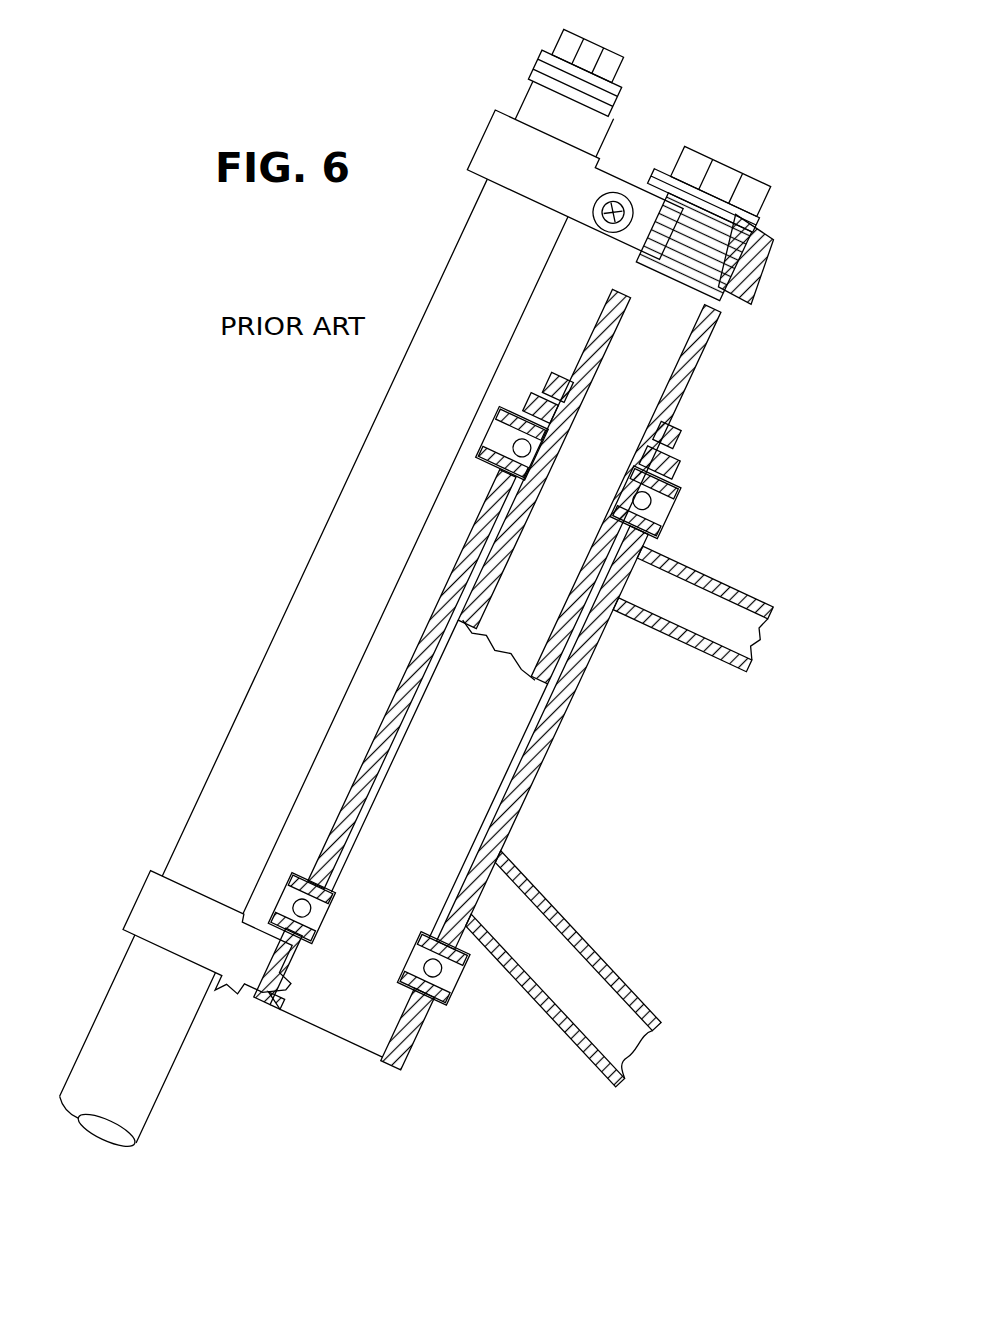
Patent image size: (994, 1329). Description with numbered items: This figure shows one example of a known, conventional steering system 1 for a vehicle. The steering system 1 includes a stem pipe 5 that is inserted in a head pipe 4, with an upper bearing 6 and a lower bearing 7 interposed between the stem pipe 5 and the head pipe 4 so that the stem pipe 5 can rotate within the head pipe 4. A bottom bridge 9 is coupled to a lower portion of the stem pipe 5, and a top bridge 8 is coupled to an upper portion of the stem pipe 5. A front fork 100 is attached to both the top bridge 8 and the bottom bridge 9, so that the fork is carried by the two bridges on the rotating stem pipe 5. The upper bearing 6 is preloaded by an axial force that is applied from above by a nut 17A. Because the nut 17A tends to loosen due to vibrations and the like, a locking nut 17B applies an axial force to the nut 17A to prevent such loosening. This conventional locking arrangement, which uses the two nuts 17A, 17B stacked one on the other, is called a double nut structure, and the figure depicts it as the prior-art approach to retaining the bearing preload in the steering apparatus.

The steering system 1 is at (287, 570).
The front fork 100 is at (258, 692).
The head pipe 4 is at (542, 742).
The stem pipe 5 is at (688, 388).
The upper bearing 6 is at (673, 488).
The lower bearing 7 is at (455, 990).
The top bridge 8 is at (618, 190).
The bottom bridge 9 is at (250, 976).
The nut 17A is at (541, 400).
The locking nut 17B is at (566, 372).